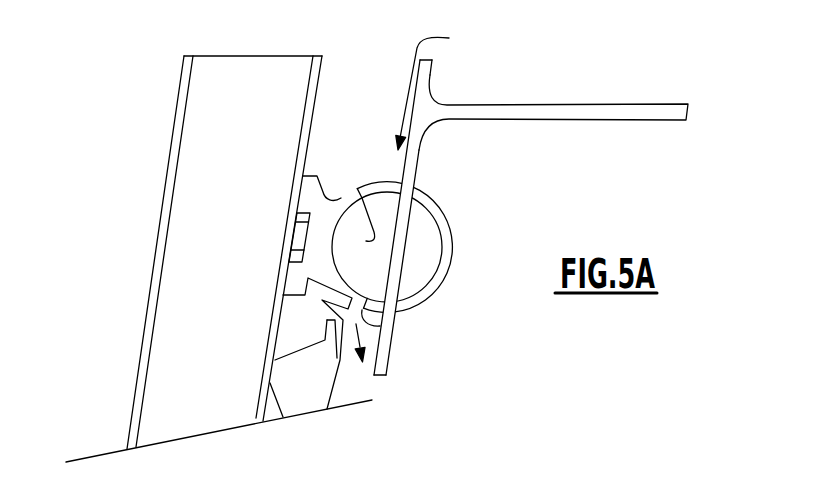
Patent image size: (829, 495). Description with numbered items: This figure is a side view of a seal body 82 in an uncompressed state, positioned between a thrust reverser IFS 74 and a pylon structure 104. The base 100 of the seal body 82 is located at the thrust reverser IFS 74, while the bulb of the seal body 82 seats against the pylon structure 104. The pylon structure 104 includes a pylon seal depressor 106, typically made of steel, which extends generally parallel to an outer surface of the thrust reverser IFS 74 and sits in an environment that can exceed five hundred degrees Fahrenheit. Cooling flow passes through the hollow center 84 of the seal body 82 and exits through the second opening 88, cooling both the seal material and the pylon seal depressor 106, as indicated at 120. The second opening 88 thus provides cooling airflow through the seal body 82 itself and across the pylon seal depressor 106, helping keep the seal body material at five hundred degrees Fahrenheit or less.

The thrust reverser IFS 74 is at (240, 68).
The seal body 82 is at (447, 238).
The hollow center 84 is at (434, 276).
The second opening 88 is at (431, 323).
The base 100 is at (328, 183).
The pylon structure 104 is at (660, 112).
The pylon seal depressor 106 is at (418, 168).
The cooling of seal material and pylon seal depressor 120 is at (421, 194).